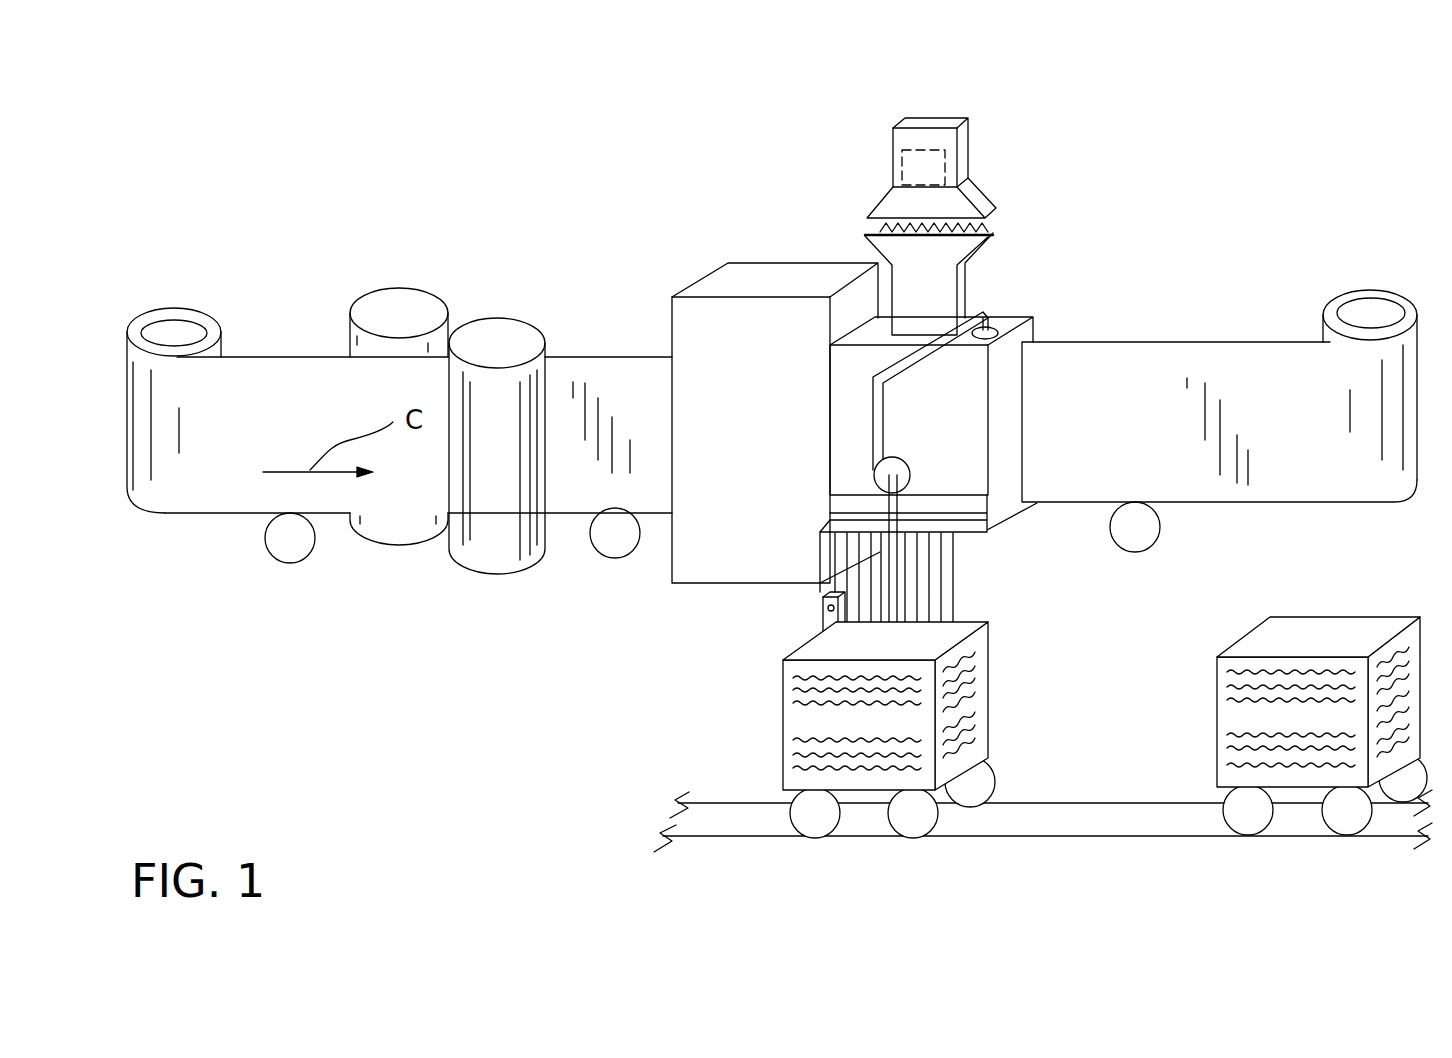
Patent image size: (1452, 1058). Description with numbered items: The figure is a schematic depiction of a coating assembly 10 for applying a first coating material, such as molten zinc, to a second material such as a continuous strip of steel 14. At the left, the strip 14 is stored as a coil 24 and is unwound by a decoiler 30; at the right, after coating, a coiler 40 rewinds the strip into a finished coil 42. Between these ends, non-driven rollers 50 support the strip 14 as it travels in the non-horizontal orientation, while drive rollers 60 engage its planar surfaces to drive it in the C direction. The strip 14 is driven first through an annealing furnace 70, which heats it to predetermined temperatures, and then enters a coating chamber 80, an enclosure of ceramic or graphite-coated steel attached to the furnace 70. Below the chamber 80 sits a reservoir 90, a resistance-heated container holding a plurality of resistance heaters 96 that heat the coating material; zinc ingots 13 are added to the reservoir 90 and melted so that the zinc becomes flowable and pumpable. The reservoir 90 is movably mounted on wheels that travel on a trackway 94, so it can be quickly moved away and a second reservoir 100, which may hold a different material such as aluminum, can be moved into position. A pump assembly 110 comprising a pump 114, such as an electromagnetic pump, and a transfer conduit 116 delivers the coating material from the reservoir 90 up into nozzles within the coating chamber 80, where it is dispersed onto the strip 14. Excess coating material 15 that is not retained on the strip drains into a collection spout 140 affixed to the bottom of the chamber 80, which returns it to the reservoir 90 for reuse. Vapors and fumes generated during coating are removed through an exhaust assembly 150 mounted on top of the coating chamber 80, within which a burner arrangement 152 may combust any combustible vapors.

The coating assembly 10 is at (1165, 300).
The zinc ingots 13 is at (822, 625).
The strip of steel 14 is at (303, 424).
The excess coating material 15 is at (930, 645).
The coil 24 is at (166, 532).
The decoiler 30 is at (192, 313).
The coiler 40 is at (1383, 300).
The coil 42 is at (1353, 483).
The rollers 50 is at (308, 550).
The drive rollers 60 is at (412, 303).
The annealing furnace 70 is at (765, 434).
The coating chamber 80 is at (1033, 328).
The reservoir 90 is at (861, 730).
The trackway 94 is at (1155, 803).
The resistance heaters 96 is at (800, 676).
The second reservoir 100 is at (1217, 735).
The pump assembly 110 is at (866, 441).
The pump 114 is at (910, 468).
The transfer conduit 116 is at (920, 355).
The collection spout 140 is at (984, 535).
The exhaust assembly 150 is at (927, 221).
The burner arrangement 152 is at (895, 158).